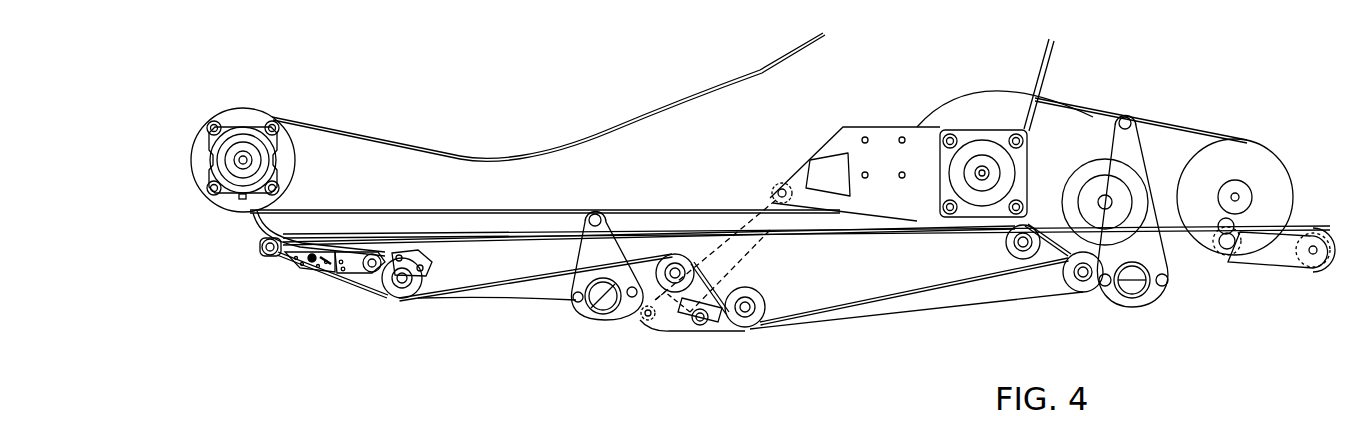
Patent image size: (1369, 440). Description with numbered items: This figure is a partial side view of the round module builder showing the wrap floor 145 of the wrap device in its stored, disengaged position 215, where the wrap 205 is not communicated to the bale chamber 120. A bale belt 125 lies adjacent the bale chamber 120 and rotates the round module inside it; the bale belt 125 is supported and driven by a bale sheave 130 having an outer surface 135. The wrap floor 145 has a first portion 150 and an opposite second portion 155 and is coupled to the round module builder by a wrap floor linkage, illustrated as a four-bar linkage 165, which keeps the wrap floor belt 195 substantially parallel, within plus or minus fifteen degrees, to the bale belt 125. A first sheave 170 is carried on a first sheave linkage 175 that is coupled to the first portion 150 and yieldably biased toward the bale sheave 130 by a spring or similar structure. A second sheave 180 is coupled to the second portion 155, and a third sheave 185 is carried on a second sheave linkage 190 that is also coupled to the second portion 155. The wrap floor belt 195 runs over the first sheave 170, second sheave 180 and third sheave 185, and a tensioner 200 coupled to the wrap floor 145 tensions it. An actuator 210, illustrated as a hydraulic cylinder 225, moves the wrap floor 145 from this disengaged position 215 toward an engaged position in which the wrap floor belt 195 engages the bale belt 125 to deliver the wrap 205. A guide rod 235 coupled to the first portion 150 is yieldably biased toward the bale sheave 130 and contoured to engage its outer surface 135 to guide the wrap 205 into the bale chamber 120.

The bale chamber 120 is at (552, 42).
The bale belt 125 is at (375, 150).
The bale sheave 130 is at (228, 125).
The outer surface 135 is at (295, 145).
The wrap floor 145 is at (787, 275).
The first portion 150 is at (445, 268).
The second portion 155 is at (925, 253).
The four-bar linkage 165 is at (603, 257).
The first sheave 170 is at (265, 254).
The first sheave linkage 175 is at (302, 270).
The second sheave 180 is at (1240, 256).
The third sheave 185 is at (1326, 277).
The second sheave linkage 190 is at (1275, 262).
The wrap floor belt 195 is at (478, 298).
The tensioner 200 is at (697, 332).
The wrap 205 is at (1275, 158).
The actuator 210 is at (762, 177).
The disengaged position 215 is at (180, 211).
The hydraulic cylinder 225 is at (773, 190).
The guide rod 235 is at (255, 222).